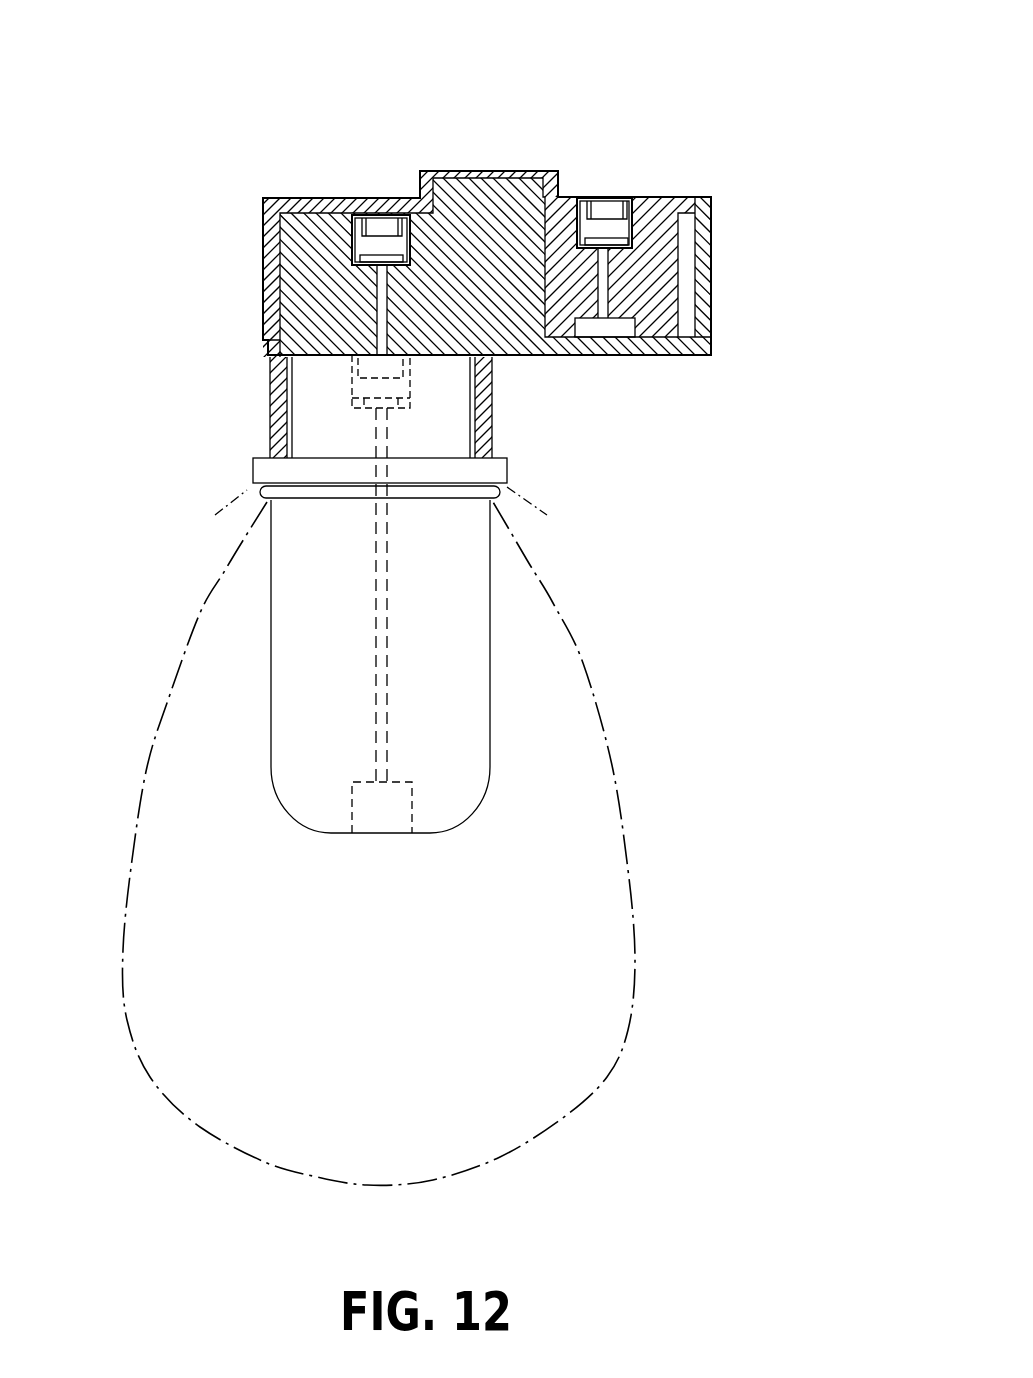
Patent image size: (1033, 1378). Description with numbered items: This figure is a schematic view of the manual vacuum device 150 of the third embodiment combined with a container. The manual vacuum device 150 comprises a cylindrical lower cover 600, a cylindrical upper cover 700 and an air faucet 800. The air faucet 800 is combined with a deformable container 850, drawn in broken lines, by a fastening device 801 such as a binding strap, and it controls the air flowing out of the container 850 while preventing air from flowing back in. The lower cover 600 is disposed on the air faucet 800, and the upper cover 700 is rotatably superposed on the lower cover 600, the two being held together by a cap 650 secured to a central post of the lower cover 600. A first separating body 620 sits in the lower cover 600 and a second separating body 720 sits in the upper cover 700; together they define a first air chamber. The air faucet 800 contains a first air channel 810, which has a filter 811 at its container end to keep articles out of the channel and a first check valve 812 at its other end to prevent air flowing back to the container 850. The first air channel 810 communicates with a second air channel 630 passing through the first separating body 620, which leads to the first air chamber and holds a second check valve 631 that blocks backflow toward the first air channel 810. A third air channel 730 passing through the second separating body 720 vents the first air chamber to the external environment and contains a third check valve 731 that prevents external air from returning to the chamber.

The manual vacuum device 150 is at (714, 166).
The cylindrical lower cover 600 is at (258, 390).
The first separating body 620 is at (302, 307).
The second air channel 630 is at (382, 290).
The second check valve 631 is at (375, 253).
The cap 650 is at (485, 171).
The cylindrical upper cover 700 is at (255, 242).
The second separating body 720 is at (655, 227).
The third air channel 730 is at (603, 337).
The third check valve 731 is at (603, 243).
The air faucet 800 is at (258, 594).
The fastening device 801 is at (497, 492).
The first air channel 810 is at (380, 550).
The filter 811 is at (377, 825).
The first check valve 812 is at (380, 387).
The deformable container 850 is at (603, 737).